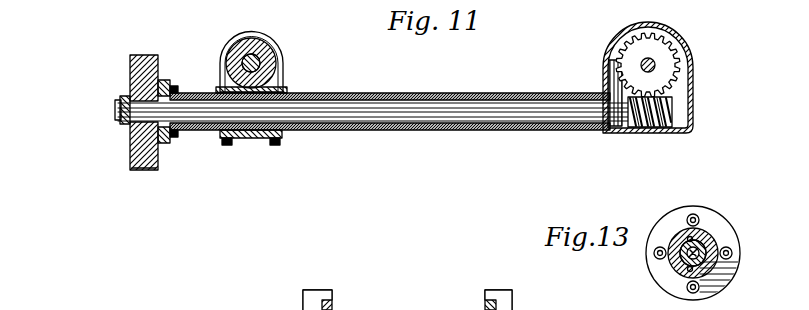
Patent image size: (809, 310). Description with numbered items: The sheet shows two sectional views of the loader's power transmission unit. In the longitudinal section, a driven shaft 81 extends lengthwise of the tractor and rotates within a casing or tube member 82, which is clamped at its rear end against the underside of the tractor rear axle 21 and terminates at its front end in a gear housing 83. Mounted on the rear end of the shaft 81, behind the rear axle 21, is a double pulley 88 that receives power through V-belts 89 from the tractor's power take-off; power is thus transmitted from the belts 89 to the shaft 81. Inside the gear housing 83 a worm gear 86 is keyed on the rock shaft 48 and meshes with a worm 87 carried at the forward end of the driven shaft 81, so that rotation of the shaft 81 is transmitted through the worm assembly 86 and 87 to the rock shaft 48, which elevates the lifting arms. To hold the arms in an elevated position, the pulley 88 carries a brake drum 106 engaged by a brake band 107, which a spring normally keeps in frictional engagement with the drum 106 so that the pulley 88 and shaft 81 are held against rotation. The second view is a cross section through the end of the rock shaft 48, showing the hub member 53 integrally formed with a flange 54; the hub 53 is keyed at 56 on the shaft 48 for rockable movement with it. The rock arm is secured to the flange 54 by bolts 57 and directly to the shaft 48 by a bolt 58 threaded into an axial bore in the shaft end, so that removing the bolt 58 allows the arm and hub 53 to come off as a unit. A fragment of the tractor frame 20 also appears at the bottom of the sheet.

In FIG. 11, the driven shaft 81 is at (411, 108).
In FIG. 11, the tube member 82 is at (330, 94).
In FIG. 11, the double pulley 88 is at (130, 80).
In FIG. 11, the brake band 107 is at (162, 80).
In FIG. 11, the brake drum 106 is at (175, 84).
In FIG. 11, the V-belts 89 is at (153, 171).
In FIG. 11, the rear axle 21 is at (266, 47).
In FIG. 11, the gear housing 83 is at (690, 62).
In FIG. 12, the gear housing 83 is at (233, 304).
In FIG. 11, the worm gear 86 is at (660, 52).
In FIG. 11, the rock shaft 48 is at (640, 65).
In FIG. 13, the rock shaft 48 is at (703, 236).
In FIG. 11, the worm 87 is at (682, 129).
In FIG. 13, the flange 54 is at (722, 233).
In FIG. 13, the hub member 53 is at (681, 233).
In FIG. 12, the hub member 53 is at (534, 309).
In FIG. 13, the key 56 is at (675, 243).
In FIG. 13, the bolts 57 is at (733, 255).
In FIG. 13, the bolt 58 is at (681, 272).
In FIG. 12, the frame 20 is at (500, 309).